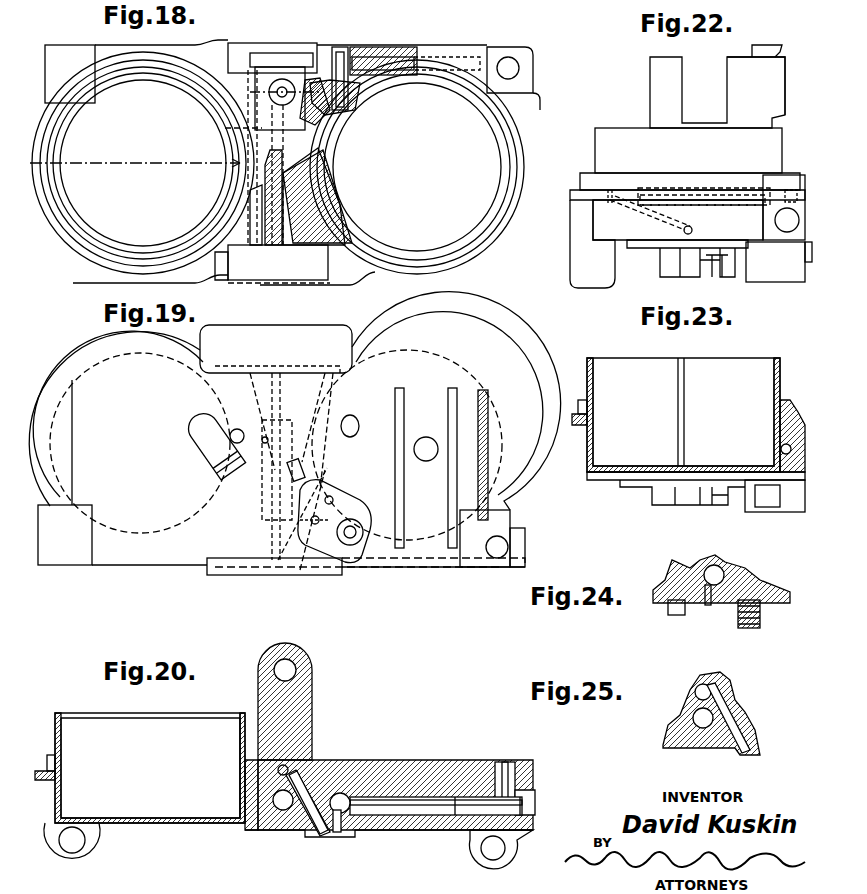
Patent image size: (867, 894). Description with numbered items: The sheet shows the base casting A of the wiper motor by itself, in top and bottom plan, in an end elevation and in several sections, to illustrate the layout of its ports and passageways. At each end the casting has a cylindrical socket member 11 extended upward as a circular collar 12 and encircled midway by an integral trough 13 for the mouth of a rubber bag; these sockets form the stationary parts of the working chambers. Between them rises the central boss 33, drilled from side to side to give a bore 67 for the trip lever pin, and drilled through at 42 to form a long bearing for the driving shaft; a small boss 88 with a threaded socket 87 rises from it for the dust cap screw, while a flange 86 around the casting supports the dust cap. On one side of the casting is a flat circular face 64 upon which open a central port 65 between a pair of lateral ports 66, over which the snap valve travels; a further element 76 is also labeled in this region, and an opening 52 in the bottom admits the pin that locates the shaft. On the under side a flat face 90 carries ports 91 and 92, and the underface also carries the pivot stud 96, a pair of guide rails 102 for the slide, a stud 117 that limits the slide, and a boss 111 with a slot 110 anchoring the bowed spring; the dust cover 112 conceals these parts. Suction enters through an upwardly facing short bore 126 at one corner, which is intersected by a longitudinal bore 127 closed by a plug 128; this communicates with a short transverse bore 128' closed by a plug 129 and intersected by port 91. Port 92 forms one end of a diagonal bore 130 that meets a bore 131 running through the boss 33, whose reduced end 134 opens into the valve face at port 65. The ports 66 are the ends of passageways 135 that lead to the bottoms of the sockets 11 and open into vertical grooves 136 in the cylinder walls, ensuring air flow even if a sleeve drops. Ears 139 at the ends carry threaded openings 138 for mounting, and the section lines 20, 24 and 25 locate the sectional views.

In FIG. 18, the cylindrical socket member 11 is at (280, 165).
In FIG. 19, the cylindrical socket member 11 is at (455, 360).
In FIG. 20, the cylindrical socket member 11 is at (220, 718).
In FIG. 23, the cylindrical socket member 11 is at (598, 445).
In FIG. 18, the circular collar 12 is at (92, 236).
In FIG. 20, the circular collar 12 is at (62, 737).
In FIG. 22, the circular collar 12 is at (596, 137).
In FIG. 23, the circular collar 12 is at (590, 360).
In FIG. 18, the trough 13 is at (60, 217).
In FIG. 20, the trough 13 is at (45, 755).
In FIG. 22, the trough 13 is at (583, 175).
In FIG. 23, the trough 13 is at (582, 400).
In FIG. 18, the section line 20 is at (549, 60).
In FIG. 22, the section line 20 is at (551, 60).
In FIG. 19, the section line 24 is at (367, 561).
In FIG. 19, the section line 25 is at (262, 522).
In FIG. 20, the boss 33 is at (312, 695).
In FIG. 22, the boss 33 is at (775, 88).
In FIG. 20, the bearing bore 42 is at (278, 808).
In FIG. 19, the opening 52 is at (300, 462).
In FIG. 18, the flat circular face 64 is at (230, 258).
In FIG. 18, the central port 65 is at (276, 248).
In FIG. 19, the central port 65 is at (272, 365).
In FIG. 22, the central port 65 is at (610, 202).
In FIG. 25, the central port 65 is at (700, 690).
In FIG. 18, the lateral port 66 is at (296, 248).
In FIG. 19, the lateral port 66 is at (292, 362).
In FIG. 20, the bore 67 is at (300, 735).
In FIG. 18, the lever 76 is at (245, 222).
In FIG. 18, the flange 86 is at (95, 262).
In FIG. 20, the flange 86 is at (40, 780).
In FIG. 22, the flange 86 is at (575, 187).
In FIG. 23, the flange 86 is at (572, 420).
In FIG. 18, the threaded socket 87 is at (268, 60).
In FIG. 18, the small boss 88 is at (283, 80).
In FIG. 22, the small boss 88 is at (785, 50).
In FIG. 19, the flat face 90 is at (355, 500).
In FIG. 20, the flat face 90 is at (343, 813).
In FIG. 24, the flat face 90 is at (740, 608).
In FIG. 18, the port 91 is at (338, 112).
In FIG. 19, the port 91 is at (333, 498).
In FIG. 20, the port 91 is at (337, 838).
In FIG. 24, the port 91 is at (708, 605).
In FIG. 18, the port 92 is at (352, 88).
In FIG. 19, the port 92 is at (305, 515).
In FIG. 20, the port 92 is at (318, 838).
In FIG. 25, the port 92 is at (745, 753).
In FIG. 19, the stud 96 is at (350, 546).
In FIG. 23, the stud 96 is at (650, 486).
In FIG. 19, the guide rail 102 is at (448, 403).
In FIG. 22, the guide rail 102 is at (645, 247).
In FIG. 23, the guide rail 102 is at (618, 480).
In FIG. 19, the slot 110 is at (200, 466).
In FIG. 19, the boss 111 is at (220, 440).
In FIG. 24, the boss 111 is at (670, 612).
In FIG. 25, the dust cover 112 is at (700, 720).
In FIG. 19, the stud 117 is at (426, 461).
In FIG. 18, the short bore 126 is at (508, 45).
In FIG. 19, the short bore 126 is at (490, 556).
In FIG. 20, the short bore 126 is at (505, 770).
In FIG. 22, the short bore 126 is at (810, 175).
In FIG. 18, the transverse bore 127 is at (405, 55).
In FIG. 19, the transverse bore 127 is at (424, 572).
In FIG. 20, the transverse bore 127 is at (420, 818).
In FIG. 22, the transverse bore 127 is at (786, 232).
In FIG. 23, the transverse bore 127 is at (780, 448).
In FIG. 20, the plug 128 is at (528, 824).
In FIG. 24, the plug 128 is at (721, 579).
In FIG. 18, the short transverse bore 128' is at (417, 134).
In FIG. 19, the short transverse bore 128' is at (301, 532).
In FIG. 20, the short transverse bore 128' is at (395, 783).
In FIG. 18, the plug 129 is at (340, 47).
In FIG. 19, the diagonal bore 130 is at (270, 560).
In FIG. 20, the diagonal bore 130 is at (302, 820).
In FIG. 25, the diagonal bore 130 is at (740, 718).
In FIG. 18, the bore 131 is at (245, 138).
In FIG. 19, the bore 131 is at (270, 440).
In FIG. 20, the bore 131 is at (290, 770).
In FIG. 22, the bore 131 is at (705, 205).
In FIG. 18, the reduced end 134 is at (318, 217).
In FIG. 19, the reduced end 134 is at (295, 373).
In FIG. 22, the reduced end 134 is at (630, 200).
In FIG. 18, the passageway 135 is at (318, 204).
In FIG. 19, the passageway 135 is at (312, 398).
In FIG. 22, the passageway 135 is at (645, 220).
In FIG. 23, the passageway 135 is at (676, 458).
In FIG. 18, the vertical groove 136 is at (232, 170).
In FIG. 20, the vertical groove 136 is at (240, 777).
In FIG. 23, the vertical groove 136 is at (686, 418).
In FIG. 20, the threaded opening 138 is at (65, 848).
In FIG. 18, the ear 139 is at (58, 50).
In FIG. 19, the ear 139 is at (68, 556).
In FIG. 20, the ear 139 is at (92, 860).
In FIG. 22, the ear 139 is at (788, 282).
In FIG. 23, the ear 139 is at (790, 510).
In FIG. 18, the base casting A is at (62, 257).
In FIG. 19, the base casting A is at (130, 572).
In FIG. 20, the base casting A is at (180, 838).
In FIG. 22, the base casting A is at (641, 107).